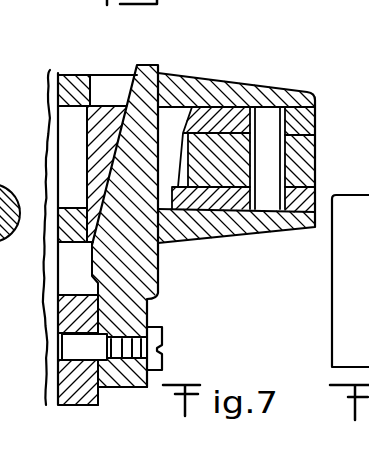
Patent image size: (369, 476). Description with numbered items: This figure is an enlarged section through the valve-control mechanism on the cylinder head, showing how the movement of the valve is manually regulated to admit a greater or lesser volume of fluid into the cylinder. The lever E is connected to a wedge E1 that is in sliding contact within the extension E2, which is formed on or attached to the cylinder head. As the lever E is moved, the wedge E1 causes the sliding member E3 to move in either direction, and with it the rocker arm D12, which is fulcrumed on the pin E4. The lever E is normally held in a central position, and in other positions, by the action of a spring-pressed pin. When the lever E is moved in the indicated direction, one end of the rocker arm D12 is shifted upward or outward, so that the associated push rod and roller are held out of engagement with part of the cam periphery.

The lever E is at (58, 323).
The wedge E1 is at (147, 308).
The extension E2 is at (176, 244).
The sliding member E3 is at (222, 205).
The pin E4 is at (272, 118).
The rocker arm D12 is at (316, 143).